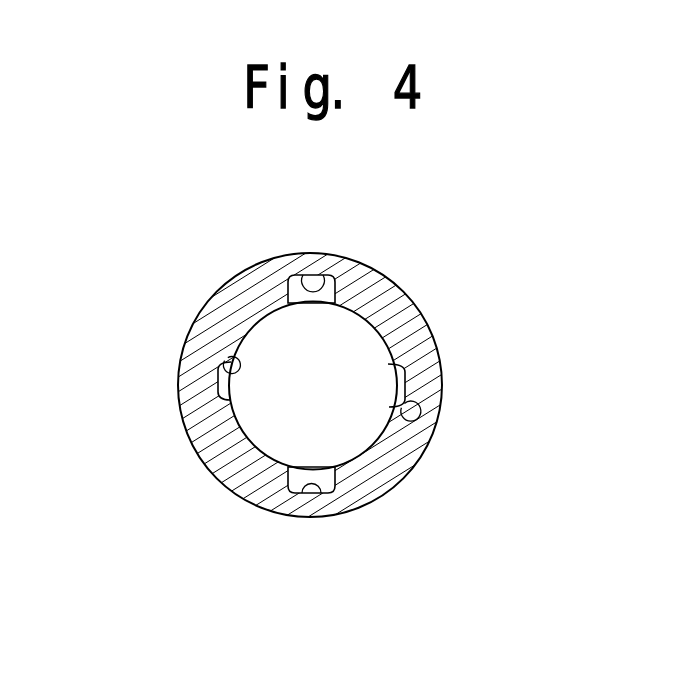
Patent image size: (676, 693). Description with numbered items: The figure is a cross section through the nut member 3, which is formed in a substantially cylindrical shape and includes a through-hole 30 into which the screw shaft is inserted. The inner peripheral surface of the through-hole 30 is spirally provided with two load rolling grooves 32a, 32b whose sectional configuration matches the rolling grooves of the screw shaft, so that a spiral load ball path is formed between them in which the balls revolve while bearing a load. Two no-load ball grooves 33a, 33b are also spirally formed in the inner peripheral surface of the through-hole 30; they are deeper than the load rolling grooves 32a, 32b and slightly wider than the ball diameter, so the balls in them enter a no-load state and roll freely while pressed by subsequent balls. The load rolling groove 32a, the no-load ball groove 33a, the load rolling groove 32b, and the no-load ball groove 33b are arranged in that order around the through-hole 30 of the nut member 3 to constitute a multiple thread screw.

The nut member 3 is at (412, 283).
The through-hole 30 is at (376, 437).
The load rolling groove 32a is at (225, 361).
The load rolling groove 32b is at (401, 408).
The no-load ball groove 33a is at (306, 494).
The no-load ball groove 33b is at (324, 278).